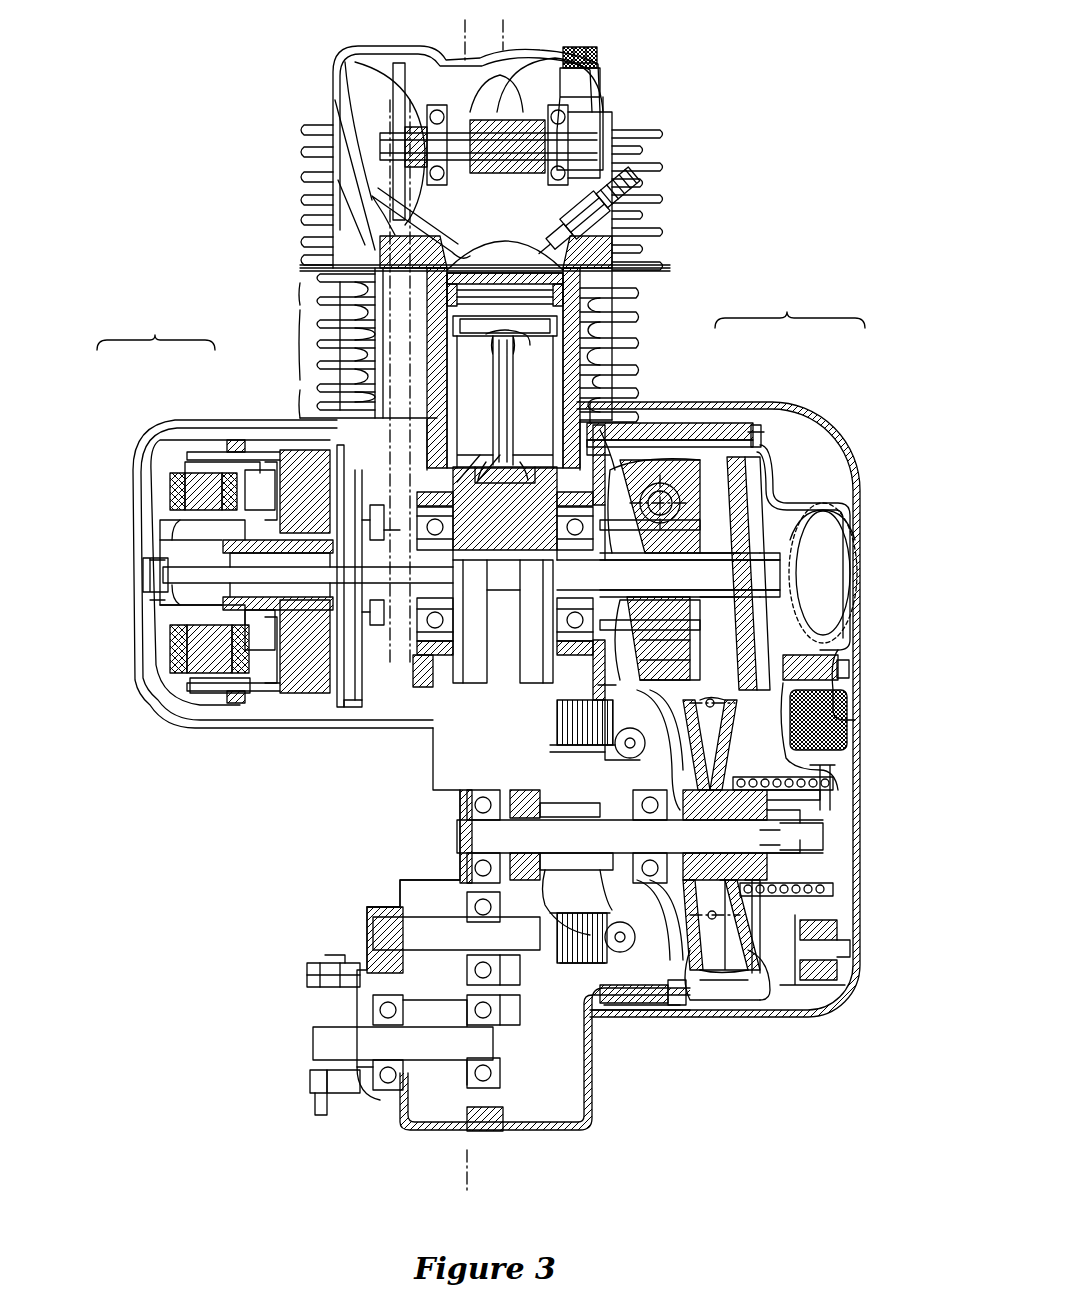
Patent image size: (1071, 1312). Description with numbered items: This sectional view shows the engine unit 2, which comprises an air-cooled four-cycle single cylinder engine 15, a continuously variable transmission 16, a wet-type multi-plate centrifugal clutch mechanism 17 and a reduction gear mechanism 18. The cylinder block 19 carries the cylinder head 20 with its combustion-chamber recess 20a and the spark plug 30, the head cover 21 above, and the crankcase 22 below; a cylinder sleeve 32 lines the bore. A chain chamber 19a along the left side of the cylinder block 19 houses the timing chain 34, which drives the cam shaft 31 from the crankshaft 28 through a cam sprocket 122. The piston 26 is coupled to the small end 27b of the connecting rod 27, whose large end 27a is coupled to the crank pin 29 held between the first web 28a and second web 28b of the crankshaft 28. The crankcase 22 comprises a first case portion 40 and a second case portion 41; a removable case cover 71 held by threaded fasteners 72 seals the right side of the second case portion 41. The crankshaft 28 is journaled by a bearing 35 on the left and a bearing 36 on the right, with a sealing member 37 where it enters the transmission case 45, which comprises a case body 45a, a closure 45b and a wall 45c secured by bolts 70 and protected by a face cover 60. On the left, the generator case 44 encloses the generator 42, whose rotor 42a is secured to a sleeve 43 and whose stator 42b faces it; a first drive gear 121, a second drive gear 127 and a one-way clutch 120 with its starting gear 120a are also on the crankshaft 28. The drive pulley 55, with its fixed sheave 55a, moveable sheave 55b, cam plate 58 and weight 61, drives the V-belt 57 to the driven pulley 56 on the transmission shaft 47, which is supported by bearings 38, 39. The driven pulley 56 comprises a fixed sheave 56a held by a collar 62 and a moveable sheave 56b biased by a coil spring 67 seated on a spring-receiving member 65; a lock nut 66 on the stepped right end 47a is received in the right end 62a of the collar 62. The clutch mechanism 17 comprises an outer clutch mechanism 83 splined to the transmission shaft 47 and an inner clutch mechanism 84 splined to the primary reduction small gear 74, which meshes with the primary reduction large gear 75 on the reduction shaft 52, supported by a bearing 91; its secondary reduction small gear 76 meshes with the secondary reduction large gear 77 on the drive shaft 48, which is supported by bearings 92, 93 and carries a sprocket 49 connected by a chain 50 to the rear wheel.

The engine unit 2 is at (276, 86).
The engine 15 is at (312, 294).
The continuously variable transmission 16 is at (836, 470).
The centrifugal clutch mechanism 17 is at (605, 1022).
The reduction gear mechanism 18 is at (352, 905).
The cylinder block 19 is at (650, 318).
The chain chamber 19a is at (322, 337).
The cylinder head 20 is at (650, 232).
The recess 20a is at (388, 222).
The head cover 21 is at (630, 105).
The crankcase 22 is at (316, 380).
The piston 26 is at (466, 348).
The connecting rod 27 is at (512, 392).
The large end 27a is at (520, 462).
The small end 27b is at (522, 345).
The crankshaft 28 is at (160, 573).
The first web 28a is at (437, 468).
The second web 28b is at (553, 500).
The crank pin 29 is at (477, 490).
The spark plug 30 is at (625, 205).
The cam shaft 31 is at (487, 102).
The cylinder sleeve 32 is at (640, 270).
The timing chain 34 is at (380, 172).
The bearing 35 is at (415, 645).
The bearing 36 is at (640, 423).
The sealing member 37 is at (620, 470).
The bearing 38 is at (630, 815).
The bearing 39 is at (462, 846).
The first case portion 40 is at (405, 1130).
The second case portion 41 is at (546, 1130).
The generator 42 is at (156, 334).
The rotor 42a is at (215, 462).
The stator 42b is at (180, 470).
The sleeve 43 is at (244, 540).
The generator case 44 is at (136, 485).
The transmission case 45 is at (790, 306).
The case body 45a is at (625, 462).
The closure 45b is at (790, 478).
The wall 45c is at (637, 623).
The transmission shaft 47 is at (475, 830).
The right end 47a is at (810, 837).
The drive shaft 48 is at (330, 1045).
The sprocket 49 is at (320, 1100).
The chain 50 is at (330, 978).
The reduction shaft 52 is at (385, 940).
The drive pulley 55 is at (760, 627).
The drive side fixed sheave 55a is at (823, 537).
The drive side moveable sheave 55b is at (690, 657).
The driven pulley 56 is at (760, 912).
The driven side fixed sheave 56a is at (700, 1002).
The driven side moveable sheave 56b is at (726, 990).
The V-belt 57 is at (715, 975).
The cam plate 58 is at (592, 528).
The face cover 60 is at (862, 500).
The weight 61 is at (718, 420).
The collar 62 is at (770, 777).
The right end 62a is at (840, 866).
The spring-receiving member 65 is at (818, 801).
The lock nut 66 is at (793, 817).
The coil spring 67 is at (822, 784).
The bolts 70 is at (757, 430).
The case cover 71 is at (643, 1010).
The threaded fasteners 72 is at (668, 990).
The primary reduction small gear 74 is at (543, 856).
The primary reduction large gear 75 is at (515, 985).
The secondary reduction small gear 76 is at (395, 913).
The secondary reduction large gear 77 is at (442, 1125).
The outer clutch mechanism 83 is at (570, 963).
The inner clutch mechanism 84 is at (556, 748).
The bearing 91 is at (440, 905).
The bearing 92 is at (480, 1105).
The bearing 93 is at (357, 1118).
The one-way clutch 120 is at (318, 438).
The starting gear 120a is at (338, 705).
The first drive gear 121 is at (352, 705).
The cam sprocket 122 is at (378, 520).
The second drive gear 127 is at (340, 450).